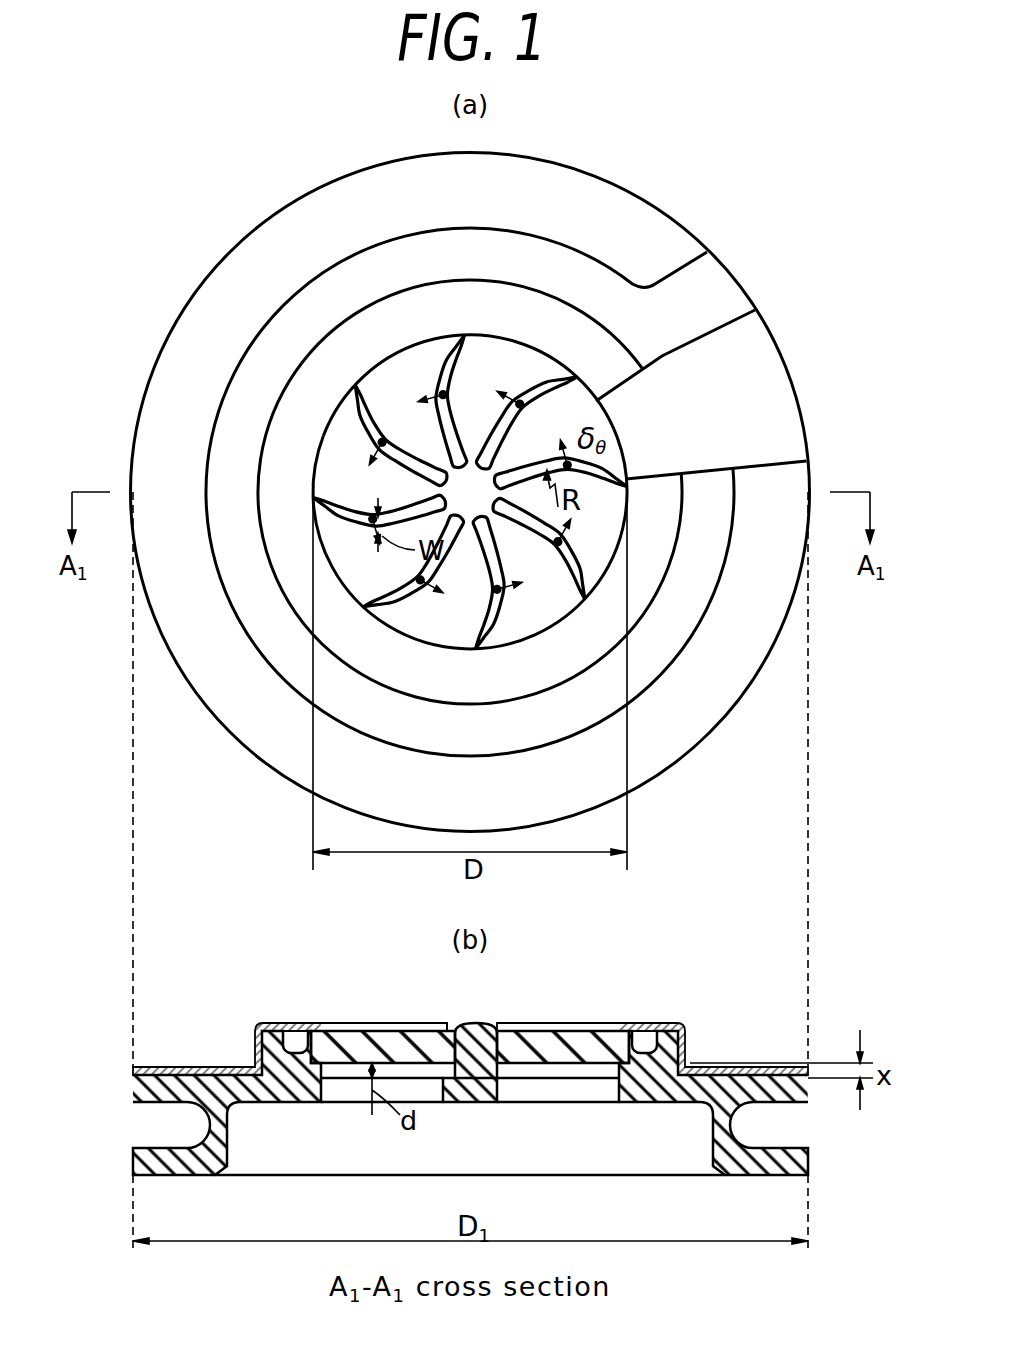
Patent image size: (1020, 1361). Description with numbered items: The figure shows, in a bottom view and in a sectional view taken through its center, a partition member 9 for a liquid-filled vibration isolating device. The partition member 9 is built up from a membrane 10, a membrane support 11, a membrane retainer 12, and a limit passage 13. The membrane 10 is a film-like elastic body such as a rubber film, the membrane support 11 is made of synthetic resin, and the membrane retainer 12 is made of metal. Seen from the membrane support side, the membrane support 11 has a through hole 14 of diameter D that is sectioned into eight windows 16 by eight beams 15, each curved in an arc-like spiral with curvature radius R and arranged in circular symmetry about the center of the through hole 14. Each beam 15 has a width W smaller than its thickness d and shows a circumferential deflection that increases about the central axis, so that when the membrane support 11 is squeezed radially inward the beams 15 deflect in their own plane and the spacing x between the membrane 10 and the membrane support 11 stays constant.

The partition member 9 is at (812, 377).
The membrane 10 is at (536, 591).
The membrane support 11 is at (712, 382).
The membrane retainer 12 is at (652, 1023).
The limit passage 13 is at (172, 1128).
The through hole 14 is at (524, 345).
The beam 15 is at (379, 444).
The window 16 is at (365, 482).